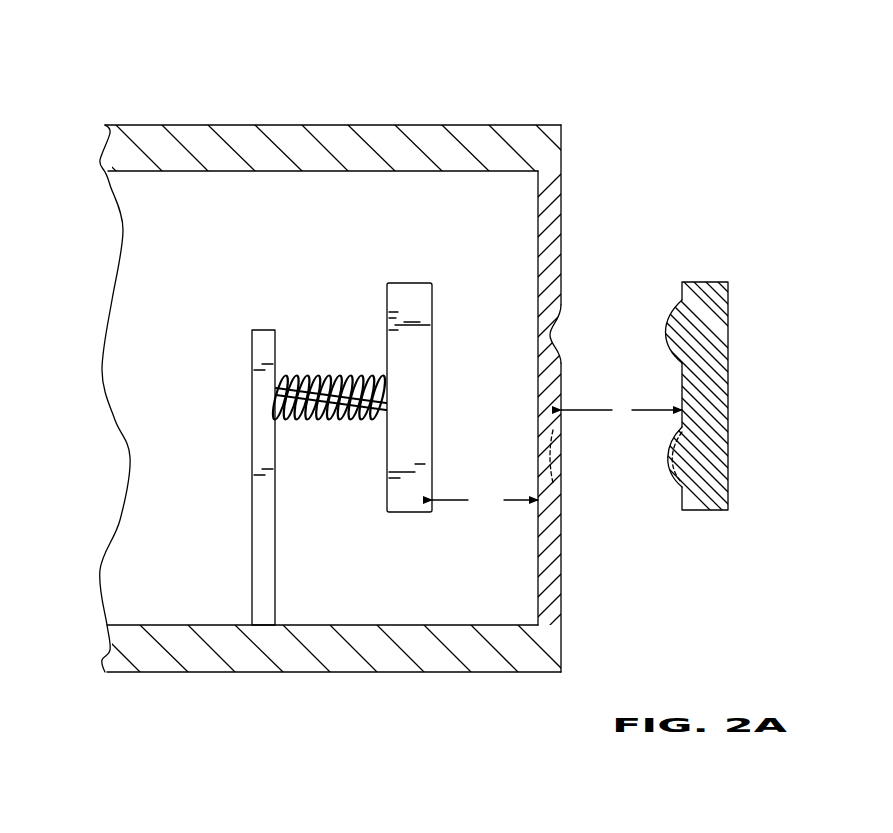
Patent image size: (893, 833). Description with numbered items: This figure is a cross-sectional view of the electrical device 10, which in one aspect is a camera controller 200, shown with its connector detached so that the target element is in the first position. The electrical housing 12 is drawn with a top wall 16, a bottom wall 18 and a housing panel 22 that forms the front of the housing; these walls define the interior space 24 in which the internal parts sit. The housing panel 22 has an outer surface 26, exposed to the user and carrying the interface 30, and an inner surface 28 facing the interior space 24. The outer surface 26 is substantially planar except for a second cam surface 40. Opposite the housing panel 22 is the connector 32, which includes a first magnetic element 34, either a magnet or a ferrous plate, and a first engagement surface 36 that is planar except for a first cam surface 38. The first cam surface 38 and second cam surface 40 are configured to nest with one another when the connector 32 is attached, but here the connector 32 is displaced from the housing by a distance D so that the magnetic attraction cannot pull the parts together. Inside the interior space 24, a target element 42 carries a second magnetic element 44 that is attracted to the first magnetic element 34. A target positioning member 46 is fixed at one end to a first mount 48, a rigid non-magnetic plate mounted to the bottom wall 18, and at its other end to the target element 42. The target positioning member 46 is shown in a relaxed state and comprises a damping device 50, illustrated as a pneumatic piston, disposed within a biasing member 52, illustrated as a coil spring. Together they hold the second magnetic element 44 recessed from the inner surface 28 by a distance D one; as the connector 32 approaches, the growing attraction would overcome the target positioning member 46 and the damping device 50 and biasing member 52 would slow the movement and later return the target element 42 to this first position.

The electrical device 10 is at (624, 153).
The camera controller 200 is at (437, 396).
The electrical housing 12 is at (587, 145).
The top wall 16 is at (383, 125).
The bottom wall 18 is at (318, 672).
The housing panel 22 is at (585, 205).
The interior space 24 is at (180, 351).
The outer surface 26 is at (562, 422).
The inner surface 28 is at (539, 532).
The interface 30 is at (593, 303).
The connector 32 is at (739, 280).
The first magnetic element 34 is at (708, 392).
The first engagement surface 36 is at (680, 425).
The first cam surface 38 is at (672, 318).
The second cam surface 40 is at (551, 334).
The target element 42 is at (364, 260).
The second magnetic element 44 is at (413, 293).
The target positioning member 46 is at (328, 505).
The first mount 48 is at (252, 447).
The damping device 50 is at (330, 380).
The biasing member 52 is at (320, 422).